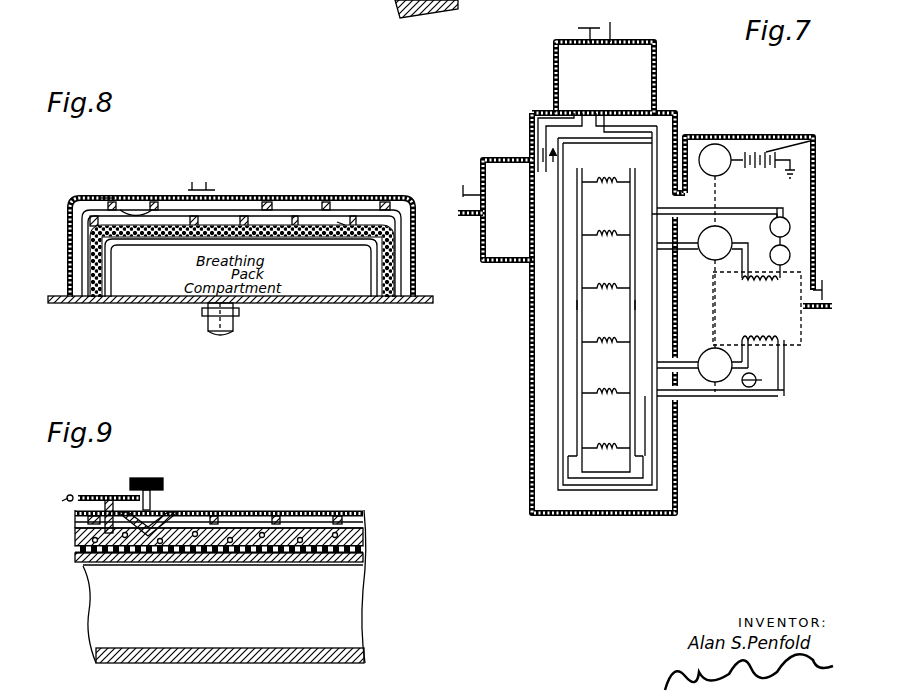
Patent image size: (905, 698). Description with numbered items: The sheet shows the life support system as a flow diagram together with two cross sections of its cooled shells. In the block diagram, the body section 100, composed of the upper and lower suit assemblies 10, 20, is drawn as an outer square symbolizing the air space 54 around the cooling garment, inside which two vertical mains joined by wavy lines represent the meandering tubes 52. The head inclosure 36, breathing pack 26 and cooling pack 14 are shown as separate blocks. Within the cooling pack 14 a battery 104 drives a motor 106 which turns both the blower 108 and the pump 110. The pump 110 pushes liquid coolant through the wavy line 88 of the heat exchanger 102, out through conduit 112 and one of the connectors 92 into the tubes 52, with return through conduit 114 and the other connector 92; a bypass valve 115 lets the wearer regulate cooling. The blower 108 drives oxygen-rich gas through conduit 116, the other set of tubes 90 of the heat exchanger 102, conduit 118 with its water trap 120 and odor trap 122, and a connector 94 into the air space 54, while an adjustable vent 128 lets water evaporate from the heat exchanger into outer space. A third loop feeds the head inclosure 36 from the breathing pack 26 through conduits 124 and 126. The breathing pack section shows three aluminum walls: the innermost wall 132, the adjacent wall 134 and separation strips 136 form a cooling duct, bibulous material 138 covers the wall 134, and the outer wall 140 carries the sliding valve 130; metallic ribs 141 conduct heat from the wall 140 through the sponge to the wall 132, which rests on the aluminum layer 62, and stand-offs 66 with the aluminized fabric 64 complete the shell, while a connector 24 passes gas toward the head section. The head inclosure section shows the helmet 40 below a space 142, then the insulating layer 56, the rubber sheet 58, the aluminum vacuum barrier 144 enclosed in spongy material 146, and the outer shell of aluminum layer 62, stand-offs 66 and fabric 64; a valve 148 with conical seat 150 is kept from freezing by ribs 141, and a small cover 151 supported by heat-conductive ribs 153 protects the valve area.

In FIG. 7, the valve 148 is at (586, 28).
In FIG. 9, the valve 148 is at (152, 477).
In FIG. 7, the head inclosure 36 is at (658, 89).
In FIG. 7, the cooling pack 14 is at (824, 115).
In FIG. 7, the breathing pack 26 is at (520, 269).
In FIG. 8, the breathing pack 26 is at (267, 158).
In FIG. 7, the sliding valve 130 is at (464, 188).
In FIG. 8, the sliding valve 130 is at (197, 180).
In FIG. 7, the conduit 124 is at (536, 127).
In FIG. 7, the conduit 126 is at (588, 128).
In FIG. 7, the air space 54 is at (560, 364).
In FIG. 7, the body section 100 is at (531, 438).
In FIG. 7, the upper suit assembly 10 is at (485, 382).
In FIG. 7, the lower suit assembly 20 is at (525, 382).
In FIG. 7, the tubes 52 is at (630, 280).
In FIG. 7, the motor 106 is at (723, 148).
In FIG. 7, the battery 104 is at (789, 158).
In FIG. 7, the blower 108 is at (739, 284).
In FIG. 7, the connector 94 is at (668, 227).
In FIG. 7, the conduit 118 is at (791, 219).
In FIG. 7, the odor trap 122 is at (778, 210).
In FIG. 7, the water trap 120 is at (790, 255).
In FIG. 7, the adjustable vent 128 is at (826, 292).
In FIG. 7, the tubes 90 is at (721, 280).
In FIG. 7, the conduit 116 is at (746, 266).
In FIG. 7, the heat exchanger 102 is at (803, 341).
In FIG. 7, the tubes 88 is at (792, 344).
In FIG. 7, the conduit 112 is at (739, 397).
In FIG. 7, the connectors 92 is at (676, 372).
In FIG. 7, the bypass valve 115 is at (756, 380).
In FIG. 7, the pump 110 is at (714, 382).
In FIG. 7, the conduit 114 is at (705, 351).
In FIG. 8, the aluminized fabric layer 64 is at (64, 212).
In FIG. 9, the aluminized fabric layer 64 is at (328, 509).
In FIG. 8, the stand-offs 66 is at (130, 200).
In FIG. 9, the stand-offs 66 is at (291, 508).
In FIG. 8, the aluminum wall 140 is at (287, 210).
In FIG. 8, the metallic ribs 141 is at (190, 212).
In FIG. 9, the metallic ribs 141 is at (130, 544).
In FIG. 8, the bibulous material 138 is at (337, 222).
In FIG. 8, the separation strips 136 is at (88, 247).
In FIG. 8, the aluminum wall 134 is at (103, 282).
In FIG. 8, the aluminum sheet wall 132 is at (109, 291).
In FIG. 8, the aluminum sheet layer 62 is at (105, 305).
In FIG. 9, the aluminum sheet layer 62 is at (299, 528).
In FIG. 8, the connector 24 is at (233, 324).
In FIG. 9, the spongy material 146 is at (362, 533).
In FIG. 9, the aluminum sheet layer 144 is at (340, 549).
In FIG. 9, the rubber sheet 58 is at (370, 557).
In FIG. 9, the insulating layer 56 is at (364, 567).
In FIG. 9, the heat-conductive ribs 153 is at (84, 541).
In FIG. 9, the space 142 is at (289, 586).
In FIG. 9, the protective helmet 40 is at (337, 648).
In FIG. 9, the conical seat 150 is at (140, 515).
In FIG. 9, the cover 151 is at (73, 499).